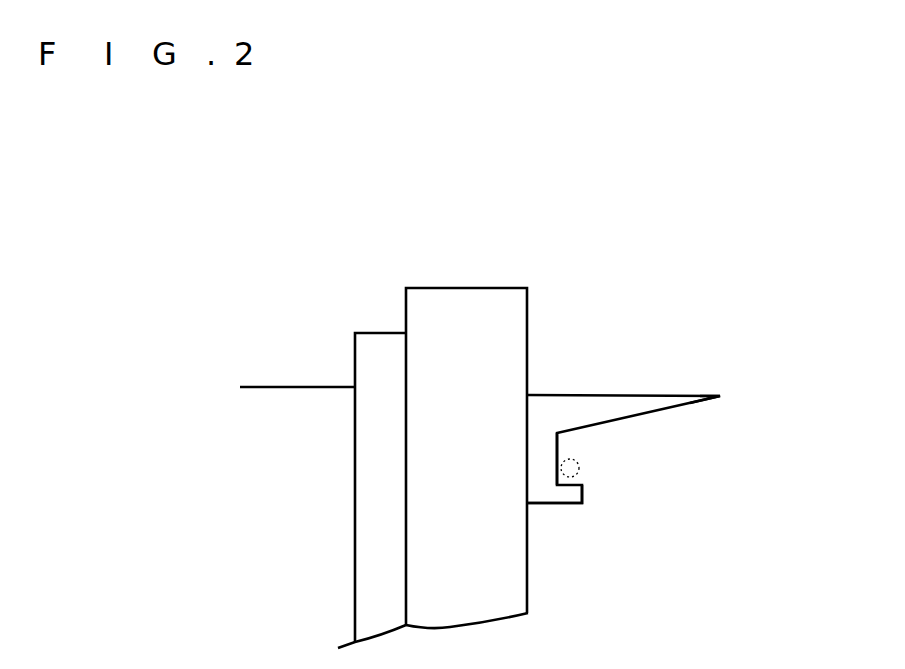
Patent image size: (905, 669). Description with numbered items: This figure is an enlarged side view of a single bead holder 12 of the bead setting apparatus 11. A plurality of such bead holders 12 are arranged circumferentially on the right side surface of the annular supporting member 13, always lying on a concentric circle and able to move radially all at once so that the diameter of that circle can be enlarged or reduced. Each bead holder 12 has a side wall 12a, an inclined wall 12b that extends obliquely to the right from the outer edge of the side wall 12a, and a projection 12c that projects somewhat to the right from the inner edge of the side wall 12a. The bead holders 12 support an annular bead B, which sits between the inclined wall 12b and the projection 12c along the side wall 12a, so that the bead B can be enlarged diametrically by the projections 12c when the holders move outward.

The assembly 11 is at (437, 228).
The bead holder 12 is at (670, 382).
The side wall 12a is at (559, 441).
The inclined wall 12b is at (700, 402).
The projection 12c is at (582, 505).
The annular supporting member 13 is at (468, 288).
The annular bead B is at (585, 470).